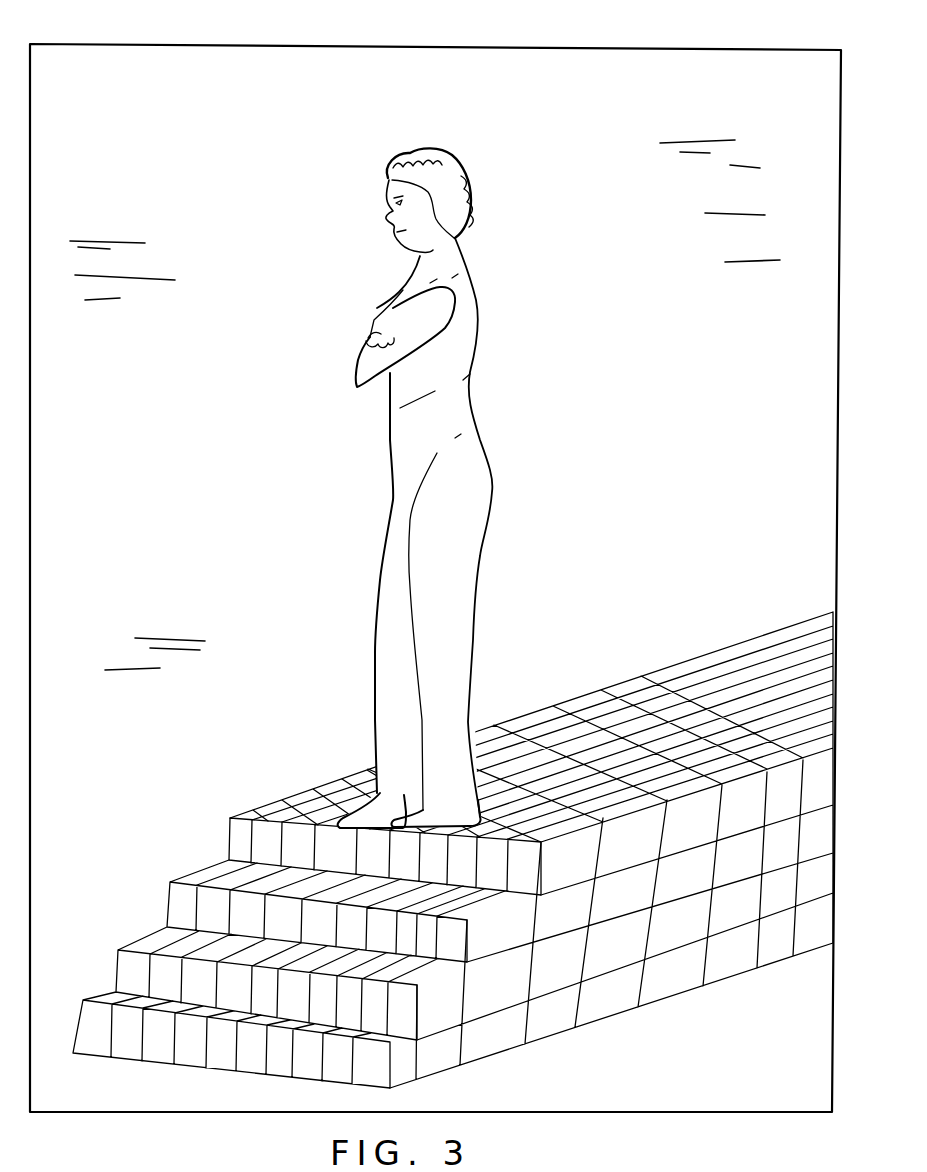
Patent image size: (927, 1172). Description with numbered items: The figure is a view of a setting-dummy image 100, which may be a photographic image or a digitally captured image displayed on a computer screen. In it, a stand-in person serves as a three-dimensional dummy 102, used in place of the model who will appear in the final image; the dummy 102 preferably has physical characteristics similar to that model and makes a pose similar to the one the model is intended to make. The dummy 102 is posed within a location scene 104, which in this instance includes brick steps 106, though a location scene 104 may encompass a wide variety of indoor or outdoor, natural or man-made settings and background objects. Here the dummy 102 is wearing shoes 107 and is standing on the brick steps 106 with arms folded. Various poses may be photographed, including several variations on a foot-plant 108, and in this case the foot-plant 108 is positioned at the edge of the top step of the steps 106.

The setting-dummy image 100 is at (487, 47).
The dummy 102 is at (482, 303).
The location scene 104 is at (116, 177).
The brick steps 106 is at (667, 633).
The shoes 107 is at (348, 803).
The foot-plant 108 is at (287, 783).